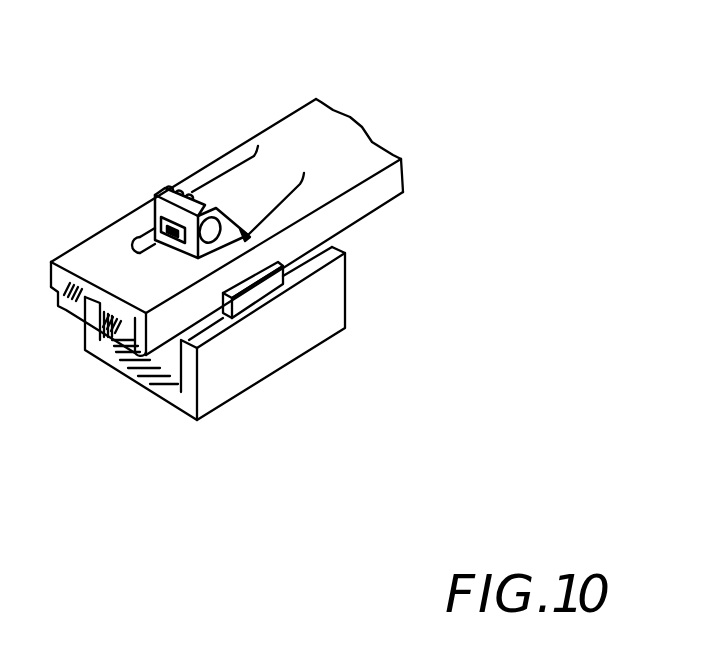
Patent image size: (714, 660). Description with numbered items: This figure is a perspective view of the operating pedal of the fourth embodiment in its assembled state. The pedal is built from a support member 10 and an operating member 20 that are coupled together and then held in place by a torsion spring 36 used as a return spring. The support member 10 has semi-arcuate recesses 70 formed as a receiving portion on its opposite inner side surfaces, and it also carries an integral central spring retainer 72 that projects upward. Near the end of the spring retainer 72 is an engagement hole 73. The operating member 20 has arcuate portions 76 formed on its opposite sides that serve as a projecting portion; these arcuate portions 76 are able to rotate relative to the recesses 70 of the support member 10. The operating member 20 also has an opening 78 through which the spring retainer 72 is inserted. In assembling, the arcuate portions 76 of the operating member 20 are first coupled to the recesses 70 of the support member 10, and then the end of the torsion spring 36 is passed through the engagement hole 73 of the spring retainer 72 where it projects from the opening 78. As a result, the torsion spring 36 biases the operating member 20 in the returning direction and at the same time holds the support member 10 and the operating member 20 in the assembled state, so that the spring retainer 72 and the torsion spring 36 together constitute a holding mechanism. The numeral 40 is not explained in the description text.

The support member 10 is at (325, 318).
The operating member 20 is at (299, 105).
The torsion spring 36 is at (239, 173).
The contact 40 is at (180, 186).
The semi-arcuate recesses 70 is at (275, 305).
The spring retainer 72 is at (157, 193).
The engagement hole 73 is at (165, 226).
The arcuate portions 76 is at (252, 296).
The opening 78 is at (248, 237).